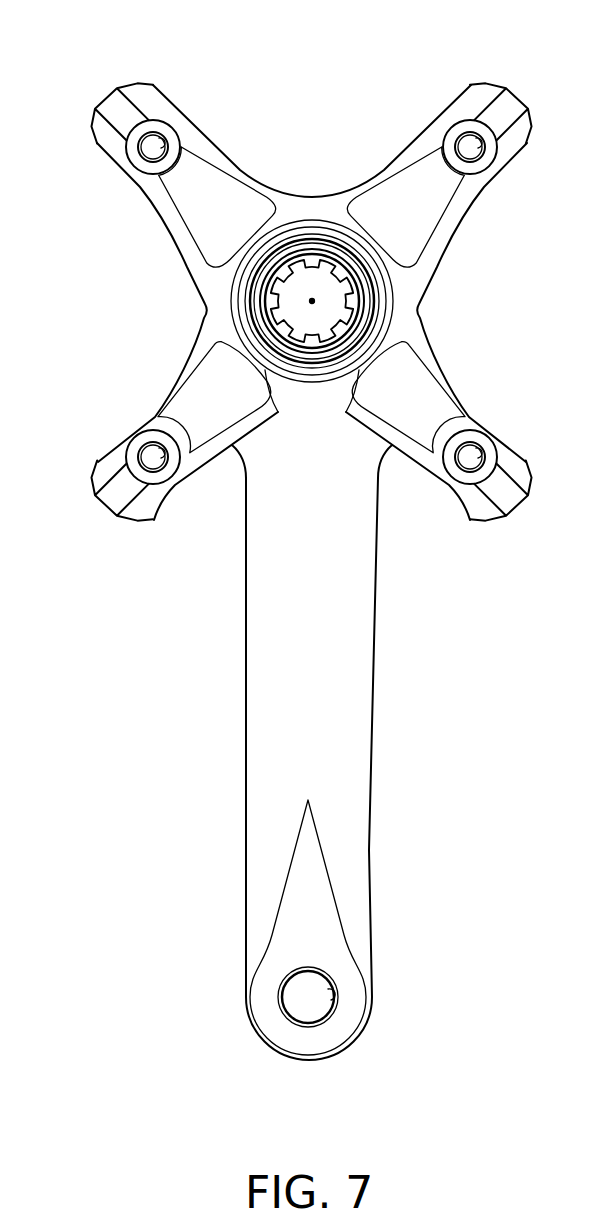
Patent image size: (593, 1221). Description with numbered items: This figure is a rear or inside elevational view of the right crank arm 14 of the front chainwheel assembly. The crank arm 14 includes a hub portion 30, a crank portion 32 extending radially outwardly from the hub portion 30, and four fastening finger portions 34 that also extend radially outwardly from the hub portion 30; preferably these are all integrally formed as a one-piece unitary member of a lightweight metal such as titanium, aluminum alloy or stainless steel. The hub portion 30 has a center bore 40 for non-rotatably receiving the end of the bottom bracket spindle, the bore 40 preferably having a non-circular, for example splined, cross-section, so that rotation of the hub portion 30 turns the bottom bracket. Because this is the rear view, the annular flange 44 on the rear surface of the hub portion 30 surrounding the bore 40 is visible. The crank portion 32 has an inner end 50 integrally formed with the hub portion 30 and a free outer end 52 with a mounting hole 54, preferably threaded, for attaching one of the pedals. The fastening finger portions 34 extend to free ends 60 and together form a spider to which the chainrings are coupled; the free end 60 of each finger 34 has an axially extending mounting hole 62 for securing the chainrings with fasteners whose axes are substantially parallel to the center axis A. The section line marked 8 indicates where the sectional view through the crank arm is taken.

The crank arm 14 is at (488, 299).
The hub portion 30 is at (218, 307).
The crank portion 32 is at (370, 717).
The fastening finger portions 34 is at (448, 375).
The center bore 40 is at (347, 335).
The annular flange 44 is at (312, 377).
The inner end 50 is at (273, 463).
The free outer end 52 is at (347, 1049).
The mounting hole 54 is at (330, 1000).
The free ends 60 is at (140, 82).
The mounting hole 62 is at (186, 140).
The center axis A is at (312, 300).
The section line 8- 8 is at (102, 92).